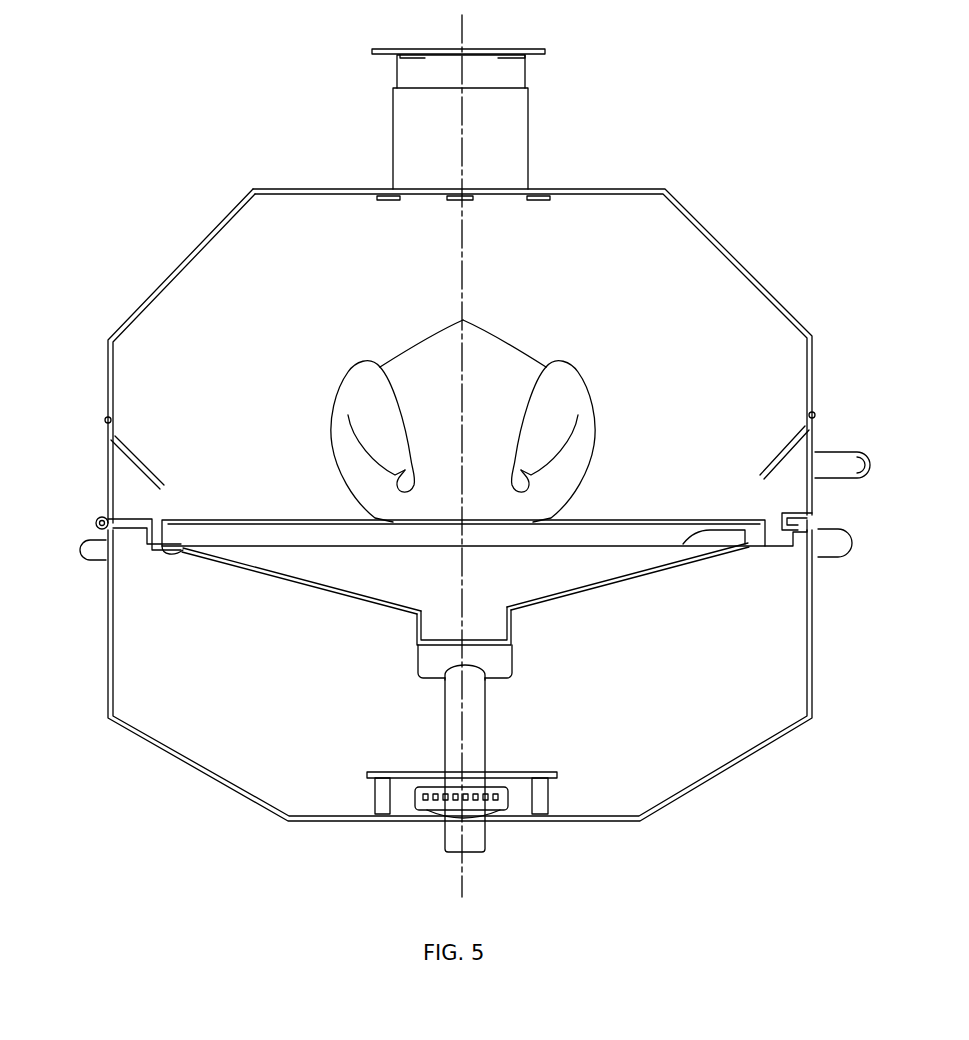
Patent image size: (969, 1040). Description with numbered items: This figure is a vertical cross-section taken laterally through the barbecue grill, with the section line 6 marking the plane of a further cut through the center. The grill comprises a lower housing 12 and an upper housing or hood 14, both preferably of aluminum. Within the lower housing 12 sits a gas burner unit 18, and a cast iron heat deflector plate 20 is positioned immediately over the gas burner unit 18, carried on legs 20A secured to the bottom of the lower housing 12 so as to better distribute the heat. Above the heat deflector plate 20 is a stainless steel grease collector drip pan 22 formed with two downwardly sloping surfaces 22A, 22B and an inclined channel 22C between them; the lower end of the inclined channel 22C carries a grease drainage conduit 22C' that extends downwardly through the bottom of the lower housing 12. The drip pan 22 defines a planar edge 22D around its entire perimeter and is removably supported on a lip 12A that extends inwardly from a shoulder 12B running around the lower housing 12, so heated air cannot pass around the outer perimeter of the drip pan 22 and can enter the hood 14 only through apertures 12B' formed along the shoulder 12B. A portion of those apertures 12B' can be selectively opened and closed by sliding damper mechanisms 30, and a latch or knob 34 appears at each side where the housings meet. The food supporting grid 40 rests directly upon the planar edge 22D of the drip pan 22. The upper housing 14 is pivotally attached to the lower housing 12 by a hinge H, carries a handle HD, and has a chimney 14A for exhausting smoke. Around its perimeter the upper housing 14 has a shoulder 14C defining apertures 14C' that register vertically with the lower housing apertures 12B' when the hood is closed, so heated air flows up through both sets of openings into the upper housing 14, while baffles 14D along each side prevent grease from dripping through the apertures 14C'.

The section line 6- 6 is at (462, 18).
The lower housing 12 is at (205, 775).
The lip or ledge 12A is at (165, 550).
The shoulder 12B is at (463, 519).
The apertures 12B' is at (760, 552).
The upper housing or hood 14 is at (732, 255).
The chimney 14A is at (393, 138).
The shoulder 14C is at (445, 510).
The apertures 14C' is at (757, 500).
The baffles 14D is at (145, 465).
The gas burner unit 18 is at (415, 797).
The heat deflector plate 20 is at (540, 772).
The legs 20A is at (373, 798).
The grease collector drip pan 22 is at (328, 639).
The downwardly sloping surface 22A is at (262, 578).
The downwardly sloping surface 22B is at (610, 583).
The inclined channel 22C is at (502, 642).
The grease drainage conduit 22C' is at (512, 758).
The planar edge 22D is at (688, 545).
The damper mechanisms 30 is at (62, 452).
The latch knob 34 is at (93, 562).
The food supporting grid 40 is at (620, 521).
The hinge H is at (101, 517).
The handle HD is at (862, 447).